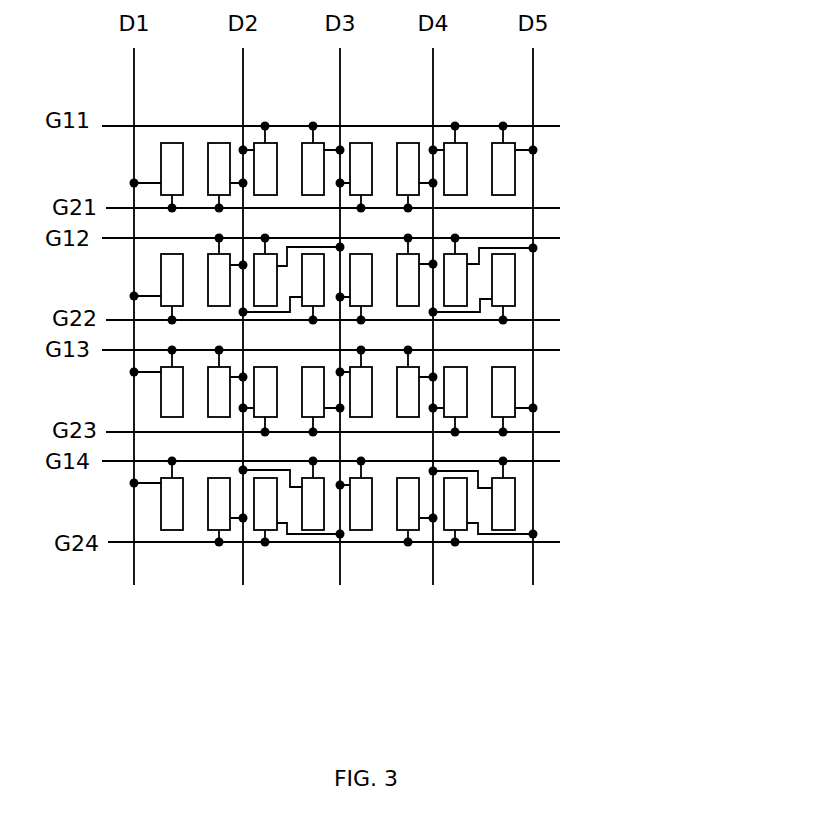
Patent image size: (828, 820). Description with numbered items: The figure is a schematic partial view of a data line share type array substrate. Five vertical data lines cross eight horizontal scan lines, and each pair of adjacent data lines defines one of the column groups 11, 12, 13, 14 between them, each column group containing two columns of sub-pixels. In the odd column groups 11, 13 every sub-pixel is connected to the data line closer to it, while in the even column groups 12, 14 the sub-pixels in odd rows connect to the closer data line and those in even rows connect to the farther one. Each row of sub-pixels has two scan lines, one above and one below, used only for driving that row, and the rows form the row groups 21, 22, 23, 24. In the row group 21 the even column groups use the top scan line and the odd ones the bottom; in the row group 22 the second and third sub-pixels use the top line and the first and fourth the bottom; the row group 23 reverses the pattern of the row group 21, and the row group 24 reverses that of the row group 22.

The column group 11 is at (183, 580).
The column group 12 is at (297, 582).
The column group 13 is at (390, 582).
The column group 14 is at (497, 582).
The row group 21 is at (567, 167).
The row group 22 is at (567, 288).
The row group 23 is at (563, 393).
The row group 24 is at (563, 515).